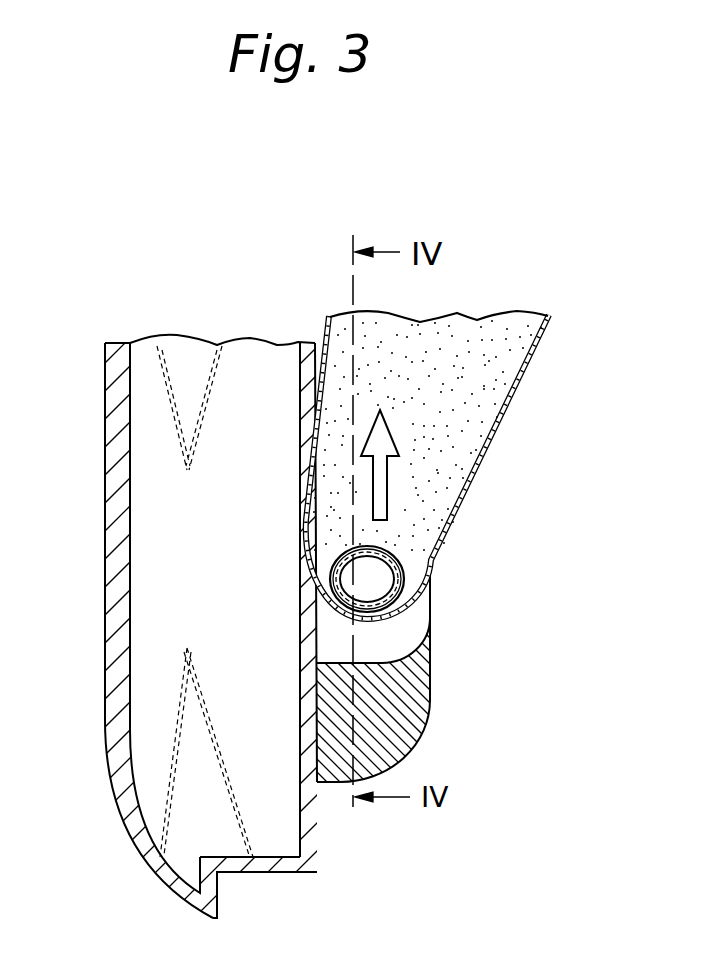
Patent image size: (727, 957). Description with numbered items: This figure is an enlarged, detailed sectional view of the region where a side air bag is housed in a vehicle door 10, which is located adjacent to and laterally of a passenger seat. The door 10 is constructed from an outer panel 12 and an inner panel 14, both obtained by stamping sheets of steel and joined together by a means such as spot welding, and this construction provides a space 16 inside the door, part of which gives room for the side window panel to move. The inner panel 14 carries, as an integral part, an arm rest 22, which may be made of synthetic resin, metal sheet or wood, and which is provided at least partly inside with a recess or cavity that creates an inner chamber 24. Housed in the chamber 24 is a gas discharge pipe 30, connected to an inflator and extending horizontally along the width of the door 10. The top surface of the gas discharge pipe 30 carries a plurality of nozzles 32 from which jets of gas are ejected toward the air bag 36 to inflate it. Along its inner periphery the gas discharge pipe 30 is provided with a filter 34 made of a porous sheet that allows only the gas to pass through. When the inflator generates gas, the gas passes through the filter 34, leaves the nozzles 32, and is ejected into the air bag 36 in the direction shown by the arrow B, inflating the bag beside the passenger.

The door 10 is at (372, 630).
The outer panel 12 is at (363, 627).
The inner panel 14 is at (320, 843).
The space 16 is at (152, 832).
The arm rest 22 is at (432, 711).
The inner chamber 24 is at (397, 627).
The gas discharge pipe 30 is at (408, 562).
The nozzles 32 is at (382, 545).
The filter 34 is at (352, 592).
The air bag 36 is at (535, 362).
The arrow B is at (393, 437).